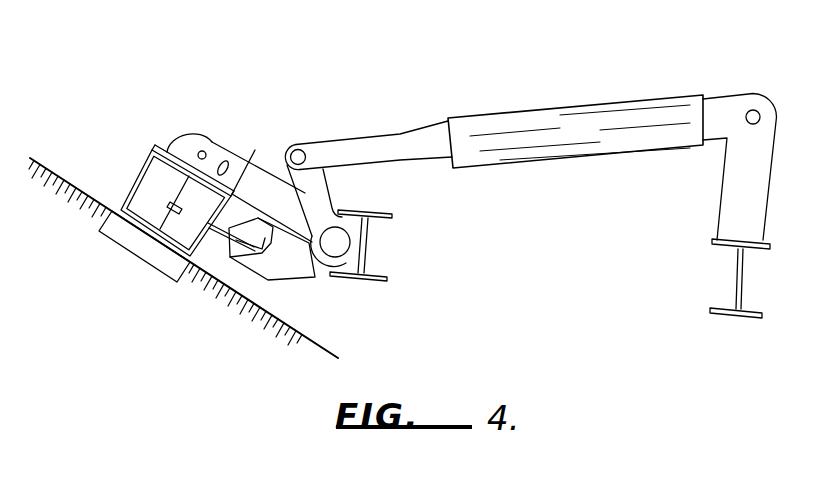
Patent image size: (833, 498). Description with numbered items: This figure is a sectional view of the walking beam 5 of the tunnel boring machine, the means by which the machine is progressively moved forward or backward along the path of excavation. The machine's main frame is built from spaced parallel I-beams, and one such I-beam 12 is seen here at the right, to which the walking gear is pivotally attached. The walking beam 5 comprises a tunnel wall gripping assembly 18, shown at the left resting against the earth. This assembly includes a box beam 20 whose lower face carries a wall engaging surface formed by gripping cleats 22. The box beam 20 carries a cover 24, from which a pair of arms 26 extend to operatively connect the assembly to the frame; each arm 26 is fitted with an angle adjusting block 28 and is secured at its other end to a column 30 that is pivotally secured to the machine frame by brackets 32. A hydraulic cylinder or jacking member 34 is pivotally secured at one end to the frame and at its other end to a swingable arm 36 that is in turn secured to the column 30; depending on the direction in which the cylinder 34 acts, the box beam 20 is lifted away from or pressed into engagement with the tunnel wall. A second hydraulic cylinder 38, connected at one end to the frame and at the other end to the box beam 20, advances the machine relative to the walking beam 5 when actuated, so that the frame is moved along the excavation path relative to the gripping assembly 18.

The walking beam 5 is at (496, 42).
The I-beam 12 is at (744, 291).
The tunnel wall gripping assembly 18 is at (216, 104).
The box beam 20 is at (137, 185).
The gripping cleats 22 is at (122, 238).
The cover 24 is at (152, 144).
The arm 26 is at (251, 165).
The angle adjusting block 28 is at (197, 143).
The column 30 is at (343, 243).
The bracket 32 is at (346, 268).
The hydraulic cylinder 34 is at (626, 100).
The swingable arm 36 is at (330, 198).
The hydraulic cylinder 38 is at (277, 272).